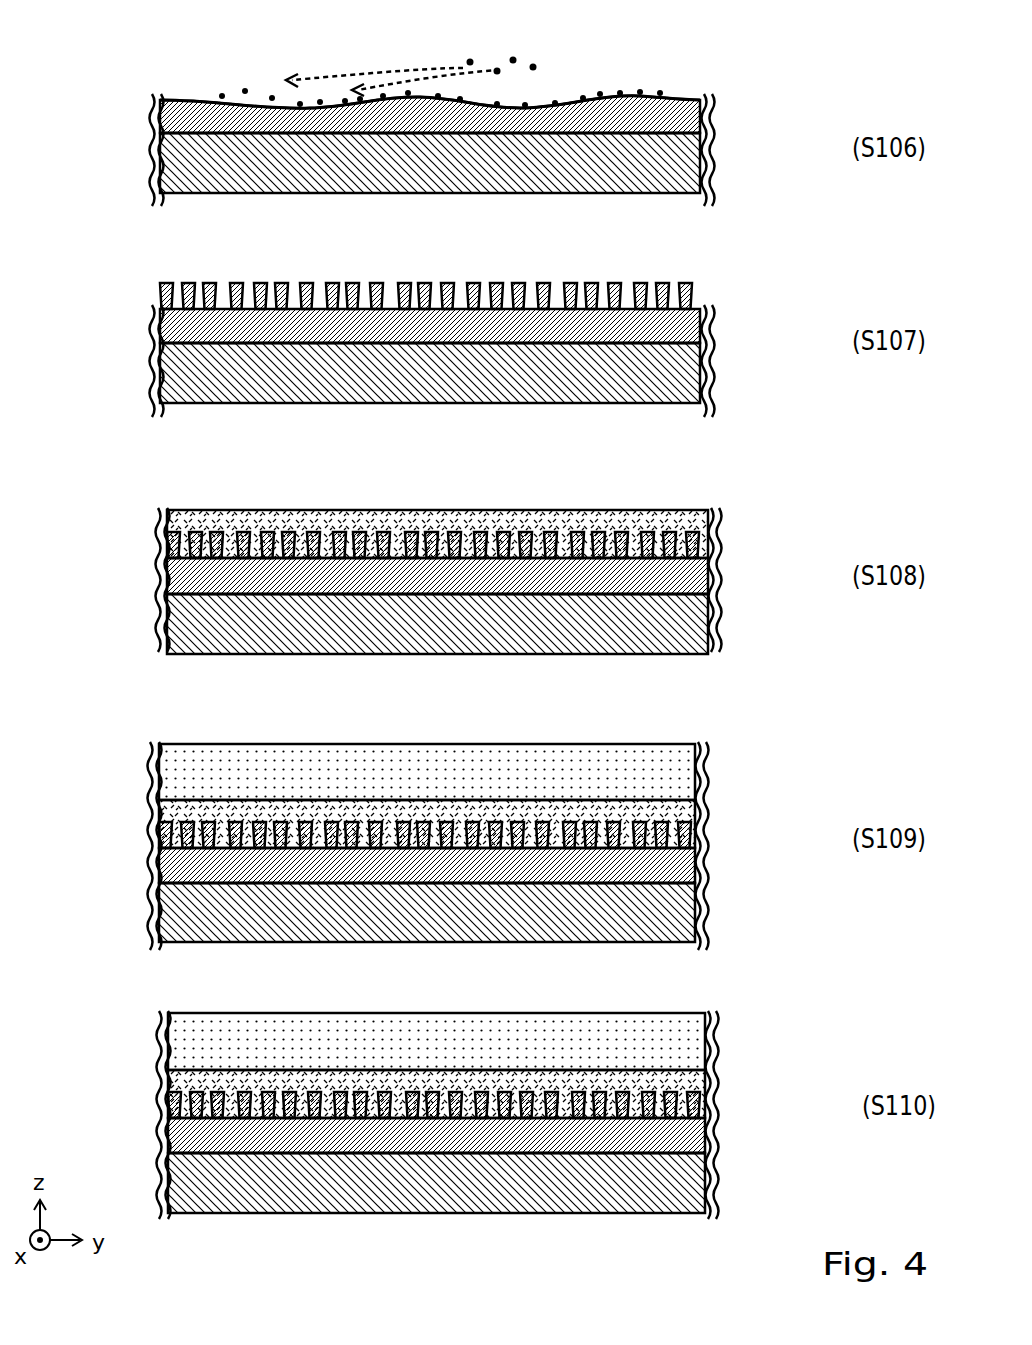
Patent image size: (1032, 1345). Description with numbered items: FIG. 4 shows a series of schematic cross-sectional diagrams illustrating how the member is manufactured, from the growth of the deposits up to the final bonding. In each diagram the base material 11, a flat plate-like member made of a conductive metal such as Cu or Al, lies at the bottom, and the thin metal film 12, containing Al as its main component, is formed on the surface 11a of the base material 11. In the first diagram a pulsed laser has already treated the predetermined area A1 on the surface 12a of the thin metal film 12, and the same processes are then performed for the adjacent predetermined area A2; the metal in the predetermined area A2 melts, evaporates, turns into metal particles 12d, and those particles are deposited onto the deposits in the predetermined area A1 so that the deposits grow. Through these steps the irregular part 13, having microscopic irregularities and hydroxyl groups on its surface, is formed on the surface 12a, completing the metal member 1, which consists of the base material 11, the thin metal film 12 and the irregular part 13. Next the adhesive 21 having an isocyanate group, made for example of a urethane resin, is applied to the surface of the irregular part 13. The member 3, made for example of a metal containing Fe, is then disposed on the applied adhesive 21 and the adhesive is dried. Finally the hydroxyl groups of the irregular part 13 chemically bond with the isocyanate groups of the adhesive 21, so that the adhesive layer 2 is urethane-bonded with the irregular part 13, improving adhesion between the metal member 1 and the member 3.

The metal member 1 is at (770, 274).
The base material 11 is at (690, 162).
The surface of the base material 11a is at (200, 133).
The thin metal film 12 is at (690, 122).
The surface of the thin metal film 12a is at (200, 96).
The metal particles 12d is at (540, 68).
The irregular part 13 is at (690, 292).
The adhesive 21 is at (690, 522).
The adhesive layer 2 is at (695, 1078).
The member 3 is at (690, 766).
The predetermined area A1 is at (405, 53).
The predetermined area A2 is at (600, 53).